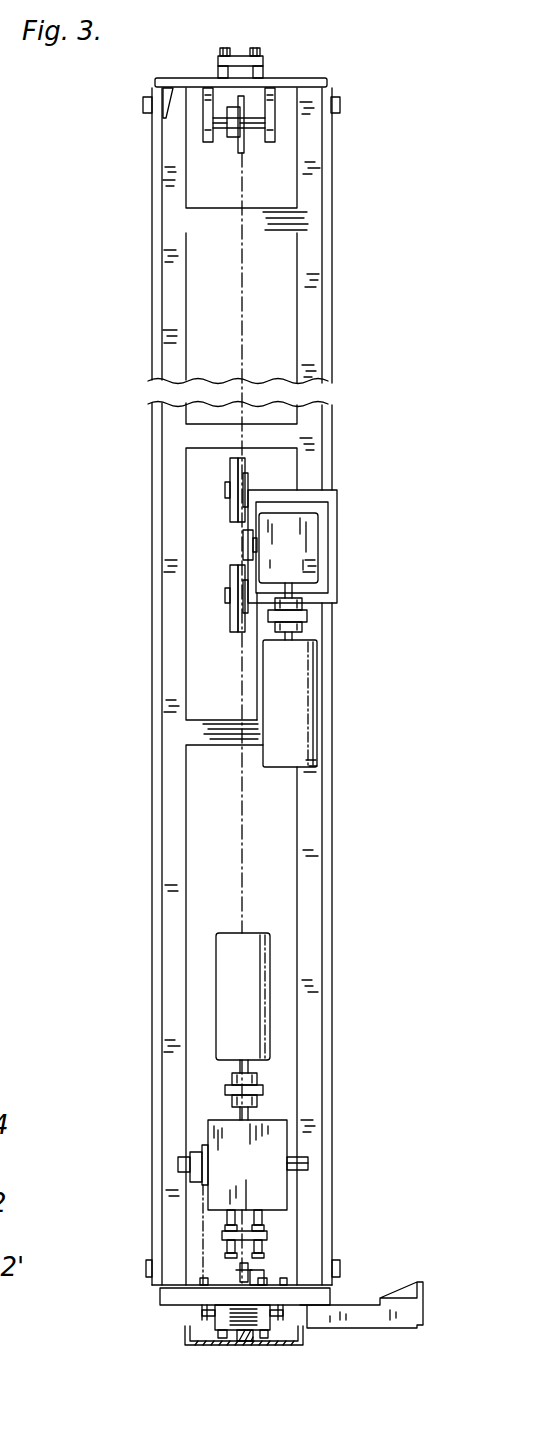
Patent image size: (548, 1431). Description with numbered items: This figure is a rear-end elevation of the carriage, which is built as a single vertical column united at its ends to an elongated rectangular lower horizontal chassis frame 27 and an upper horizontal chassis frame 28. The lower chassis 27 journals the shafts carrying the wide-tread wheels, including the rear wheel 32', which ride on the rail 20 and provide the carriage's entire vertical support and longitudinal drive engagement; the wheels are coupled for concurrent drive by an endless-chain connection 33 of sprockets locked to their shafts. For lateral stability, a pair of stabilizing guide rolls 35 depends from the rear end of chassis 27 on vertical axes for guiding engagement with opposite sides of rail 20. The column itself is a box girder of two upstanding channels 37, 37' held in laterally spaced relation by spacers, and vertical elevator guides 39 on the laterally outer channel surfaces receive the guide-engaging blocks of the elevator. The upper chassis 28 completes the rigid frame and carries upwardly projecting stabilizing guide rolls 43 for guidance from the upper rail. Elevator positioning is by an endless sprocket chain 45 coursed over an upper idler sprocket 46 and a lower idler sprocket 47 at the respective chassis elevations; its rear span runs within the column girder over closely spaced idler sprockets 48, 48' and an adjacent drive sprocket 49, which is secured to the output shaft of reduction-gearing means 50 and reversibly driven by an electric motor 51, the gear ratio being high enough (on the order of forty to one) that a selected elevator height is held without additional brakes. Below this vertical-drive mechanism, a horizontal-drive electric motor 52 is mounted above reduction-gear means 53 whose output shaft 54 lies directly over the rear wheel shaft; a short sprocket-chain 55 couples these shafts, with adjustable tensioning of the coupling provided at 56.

The rail 20 is at (240, 1333).
The lower horizontal chassis frame 27 is at (149, 1297).
The upper horizontal chassis frame 28 is at (317, 76).
The rear wheel 32' is at (327, 1252).
The endless-chain connection 33 is at (283, 1277).
The rear guide rolls 35 is at (217, 1343).
The upstanding channel 37 is at (342, 686).
The upstanding channel 37' is at (136, 686).
The vertical elevator guides 39 is at (152, 418).
The upper stabilizing guide roll 43 is at (257, 48).
The endless sprocket chain 45 is at (243, 277).
The upper idler sprocket 46 is at (240, 152).
The lower idler sprocket 47 is at (223, 1267).
The idler sprocket 48 is at (310, 588).
The idler sprocket 48' is at (307, 480).
The drive sprocket 49 is at (240, 545).
The reduction-gearing means 50 is at (300, 535).
The electric motor 51 is at (297, 687).
The horizontal-drive electric motor 52 is at (262, 967).
The reduction-gear means 53 is at (273, 1138).
The output shaft 54 is at (308, 1163).
The short sprocket-chain 55 is at (203, 1198).
The adjustable tensioning 56 is at (268, 1220).